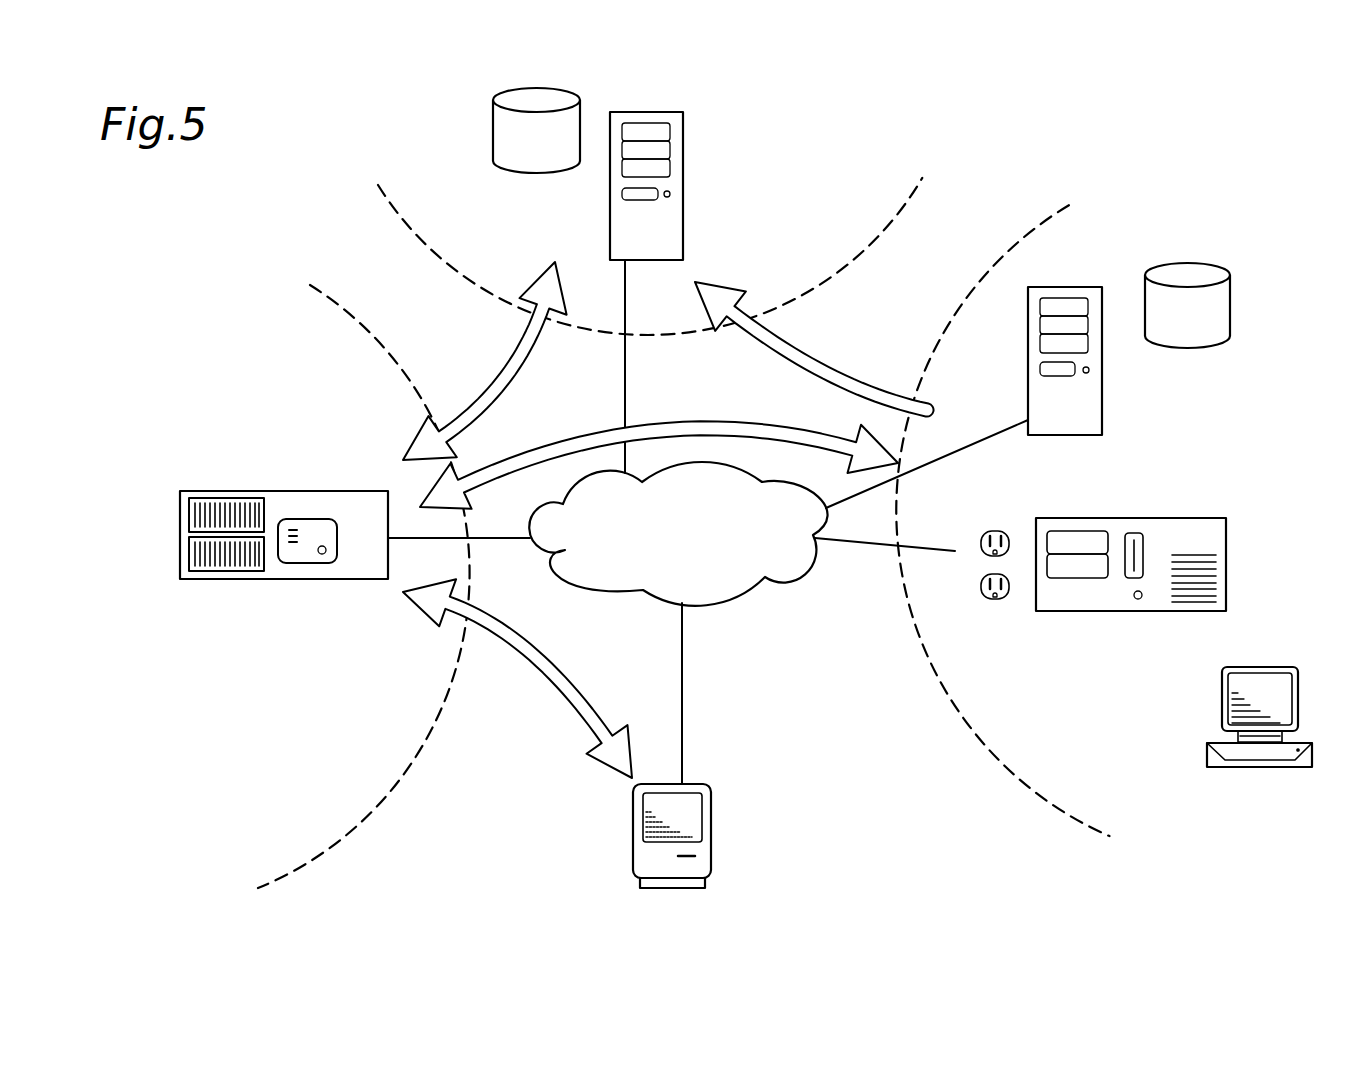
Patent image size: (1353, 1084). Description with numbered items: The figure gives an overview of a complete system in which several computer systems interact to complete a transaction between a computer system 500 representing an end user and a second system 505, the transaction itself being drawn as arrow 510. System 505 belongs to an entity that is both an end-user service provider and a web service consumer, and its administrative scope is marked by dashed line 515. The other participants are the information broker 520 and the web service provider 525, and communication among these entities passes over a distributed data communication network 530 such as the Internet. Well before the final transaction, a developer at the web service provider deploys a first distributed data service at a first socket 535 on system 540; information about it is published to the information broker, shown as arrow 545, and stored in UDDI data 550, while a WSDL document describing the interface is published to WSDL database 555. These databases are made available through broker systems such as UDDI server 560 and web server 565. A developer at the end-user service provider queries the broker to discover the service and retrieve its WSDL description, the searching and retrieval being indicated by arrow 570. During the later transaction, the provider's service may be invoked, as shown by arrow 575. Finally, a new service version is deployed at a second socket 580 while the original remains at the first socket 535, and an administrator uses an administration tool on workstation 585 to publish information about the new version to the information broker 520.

The computer system 500 is at (711, 865).
The second system 505 is at (227, 579).
The arrow 510 is at (570, 707).
The dashed line 515 is at (257, 889).
The information broker 520 is at (918, 188).
The web service provider 525 is at (1111, 836).
The distributed data communication network 530 is at (678, 534).
The socket V1 535 is at (1013, 527).
The system 540 is at (1160, 611).
The arrow 545 is at (808, 367).
The UDDI data 550 is at (537, 115).
The WSDL database 555 is at (1190, 290).
The UDDI server 560 is at (610, 218).
The web server 565 is at (1102, 392).
The arrow 570 is at (506, 366).
The arrow 575 is at (733, 432).
The socket V2 580 is at (978, 592).
The workstation 585 is at (1235, 767).